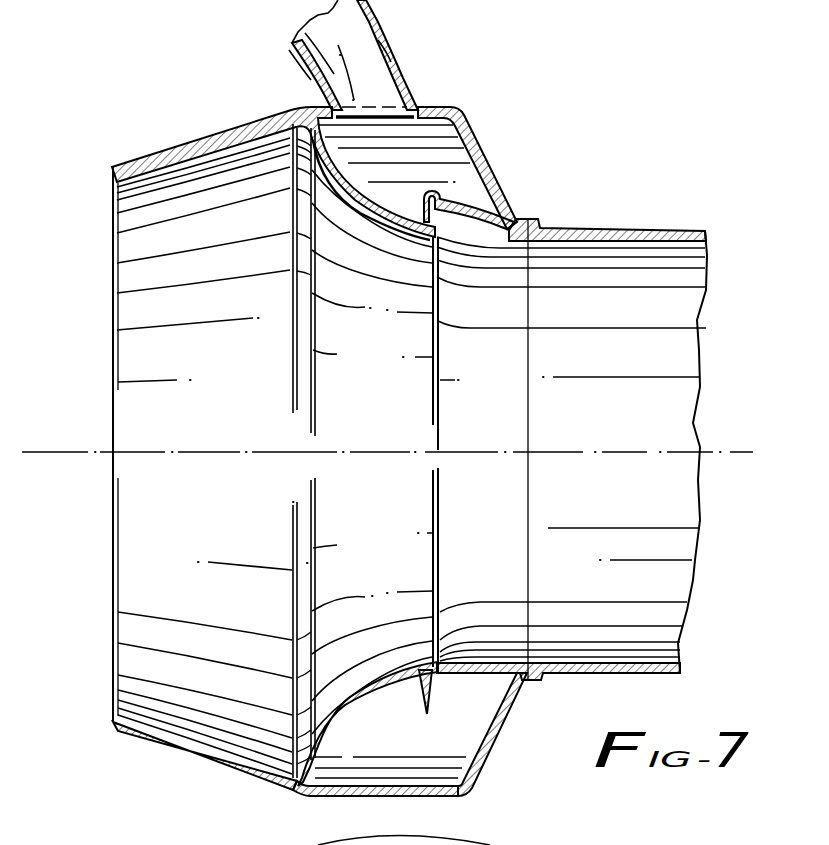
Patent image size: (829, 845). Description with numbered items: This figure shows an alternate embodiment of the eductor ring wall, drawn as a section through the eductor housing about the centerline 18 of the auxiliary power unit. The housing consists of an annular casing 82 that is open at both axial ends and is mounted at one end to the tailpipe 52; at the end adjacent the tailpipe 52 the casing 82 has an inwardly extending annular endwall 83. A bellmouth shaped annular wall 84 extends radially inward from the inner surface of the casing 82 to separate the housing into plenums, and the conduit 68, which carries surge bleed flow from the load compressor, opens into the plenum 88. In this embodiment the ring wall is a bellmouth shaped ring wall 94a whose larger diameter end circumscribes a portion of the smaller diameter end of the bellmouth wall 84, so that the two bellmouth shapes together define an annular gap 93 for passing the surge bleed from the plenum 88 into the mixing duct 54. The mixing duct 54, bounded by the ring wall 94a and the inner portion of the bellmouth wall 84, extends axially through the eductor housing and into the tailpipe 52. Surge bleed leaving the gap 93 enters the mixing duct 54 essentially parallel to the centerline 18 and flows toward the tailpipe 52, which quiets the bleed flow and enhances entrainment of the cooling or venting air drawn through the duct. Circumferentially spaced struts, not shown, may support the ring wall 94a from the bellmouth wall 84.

The centerline 18 is at (607, 453).
The tailpipe 52 is at (641, 408).
The mixing duct 54 is at (386, 514).
The conduit 68 is at (385, 78).
The annular casing 82 is at (413, 797).
The annular endwall 83 is at (500, 717).
The bellmouth shaped annular wall 84 is at (335, 735).
The plenum 88 is at (394, 732).
The annular gap 93 is at (432, 681).
The bellmouth shaped ring wall 94a is at (478, 732).